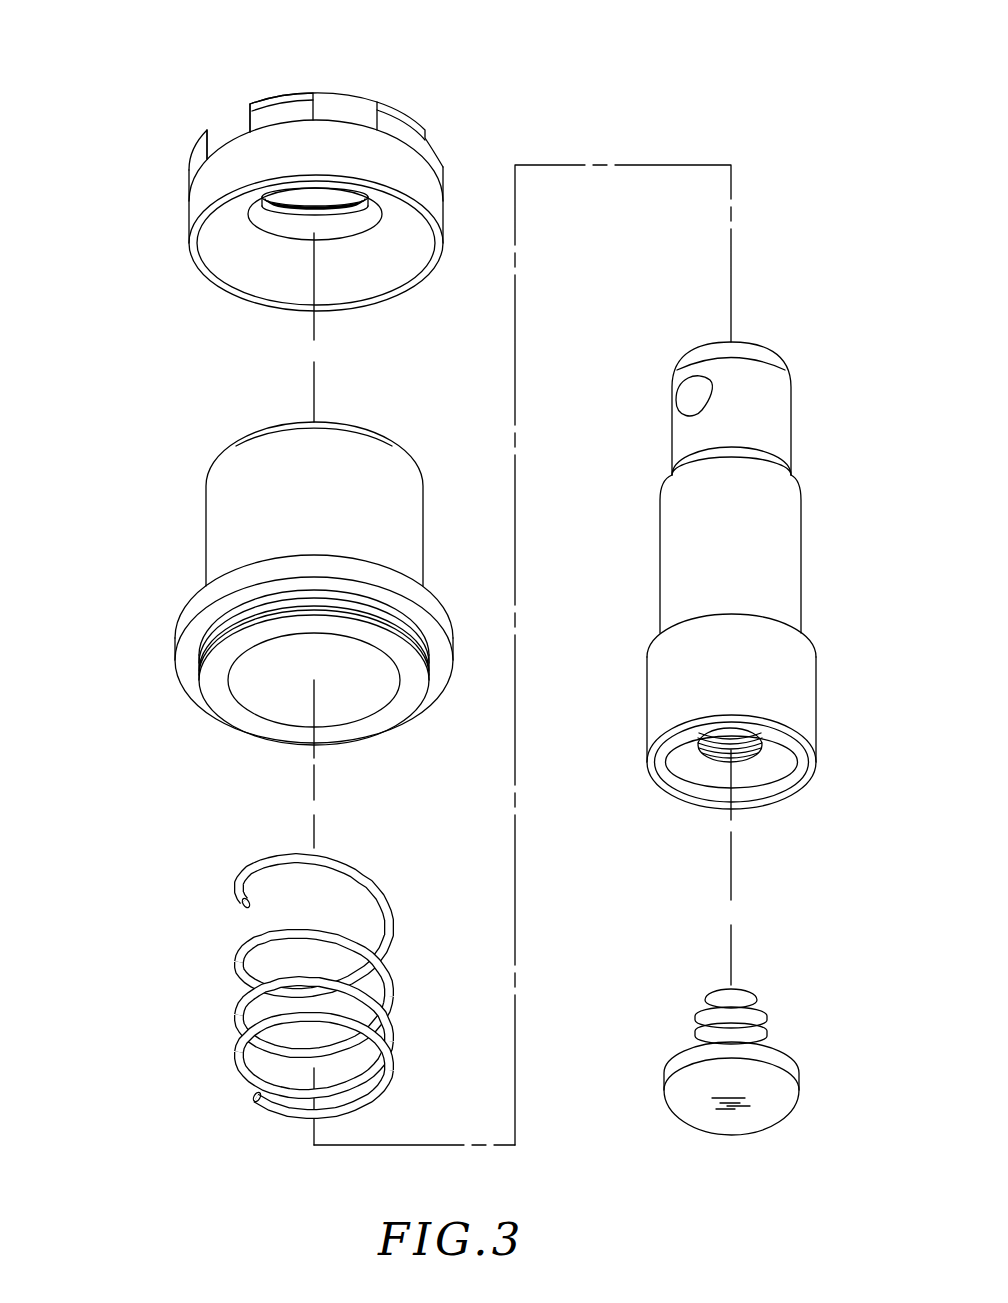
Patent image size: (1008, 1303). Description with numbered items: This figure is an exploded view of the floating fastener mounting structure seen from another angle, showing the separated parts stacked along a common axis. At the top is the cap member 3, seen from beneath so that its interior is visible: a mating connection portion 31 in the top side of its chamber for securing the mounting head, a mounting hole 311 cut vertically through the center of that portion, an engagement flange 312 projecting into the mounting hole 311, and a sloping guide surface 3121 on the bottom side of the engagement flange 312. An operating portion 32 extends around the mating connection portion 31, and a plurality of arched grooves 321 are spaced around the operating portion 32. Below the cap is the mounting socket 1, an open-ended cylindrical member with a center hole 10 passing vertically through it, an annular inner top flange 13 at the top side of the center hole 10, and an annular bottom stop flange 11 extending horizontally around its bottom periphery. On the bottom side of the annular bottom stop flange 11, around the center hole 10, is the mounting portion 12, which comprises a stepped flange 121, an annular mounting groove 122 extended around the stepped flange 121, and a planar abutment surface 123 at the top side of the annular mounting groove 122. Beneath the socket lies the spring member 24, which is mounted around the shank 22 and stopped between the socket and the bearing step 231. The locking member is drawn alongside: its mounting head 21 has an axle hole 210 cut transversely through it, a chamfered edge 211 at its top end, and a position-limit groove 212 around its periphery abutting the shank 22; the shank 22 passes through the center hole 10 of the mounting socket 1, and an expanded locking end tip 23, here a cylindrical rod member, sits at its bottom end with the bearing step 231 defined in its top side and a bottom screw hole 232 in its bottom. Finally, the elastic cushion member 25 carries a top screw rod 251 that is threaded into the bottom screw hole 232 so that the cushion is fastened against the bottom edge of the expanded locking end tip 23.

The mounting socket 1 is at (241, 571).
The center hole 10 is at (272, 697).
The annular bottom stop flange 11 is at (198, 602).
The mounting portion 12 is at (241, 650).
The stepped flange 121 is at (213, 625).
The annular mounting groove 122 is at (282, 610).
The planar abutment surface 123 is at (203, 657).
The annular inner top flange 13 is at (333, 423).
The cap member 3 is at (170, 155).
The mating connection portion 31 is at (260, 204).
The mounting hole 311 is at (283, 206).
The engagement flange 312 is at (298, 220).
The sloping guide surface 3121 is at (280, 232).
The operating portion 32 is at (278, 106).
The arched grooves 321 is at (228, 125).
The mounting head 21 is at (723, 401).
The axle hole 210 is at (685, 399).
The chamfered edge 211 is at (755, 348).
The position-limit groove 212 is at (702, 457).
The shank 22 is at (785, 548).
The expanded locking end tip 23 is at (759, 708).
The bearing step 231 is at (783, 623).
The bottom screw hole 232 is at (753, 753).
The spring member 24 is at (242, 953).
The elastic cushion member 25 is at (754, 1069).
The top screw rod 251 is at (747, 1010).